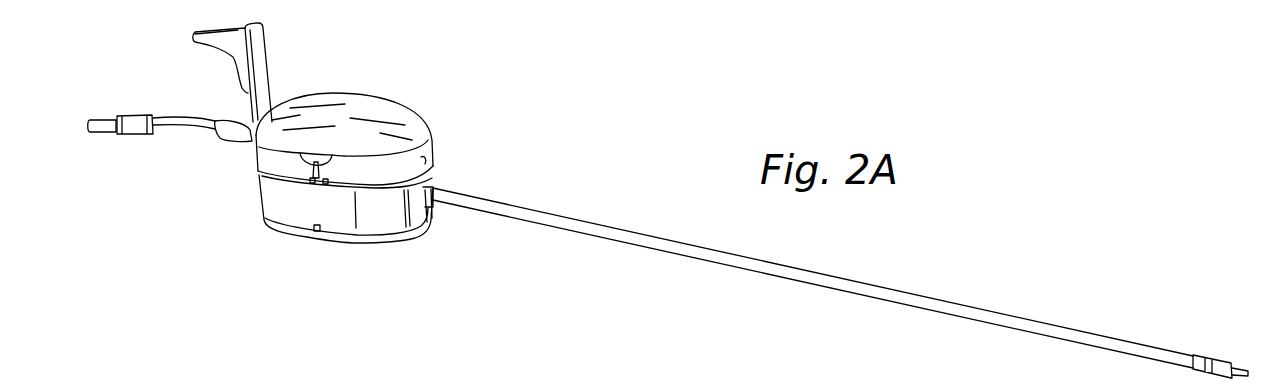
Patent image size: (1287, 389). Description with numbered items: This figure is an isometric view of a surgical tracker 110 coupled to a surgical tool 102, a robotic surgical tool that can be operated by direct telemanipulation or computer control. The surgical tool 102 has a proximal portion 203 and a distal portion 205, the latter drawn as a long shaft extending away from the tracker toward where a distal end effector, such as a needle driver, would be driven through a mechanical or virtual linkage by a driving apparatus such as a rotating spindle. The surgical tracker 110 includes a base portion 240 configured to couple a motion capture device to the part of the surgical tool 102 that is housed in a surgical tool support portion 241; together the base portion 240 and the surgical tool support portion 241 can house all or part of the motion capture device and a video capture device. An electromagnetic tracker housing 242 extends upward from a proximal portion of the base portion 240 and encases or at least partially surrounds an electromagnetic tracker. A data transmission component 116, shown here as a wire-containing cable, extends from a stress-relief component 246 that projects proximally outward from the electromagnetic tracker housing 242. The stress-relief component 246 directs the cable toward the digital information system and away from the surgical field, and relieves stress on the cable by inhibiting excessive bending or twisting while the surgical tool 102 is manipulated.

The surgical tool 102 is at (497, 83).
The surgical tracker 110 is at (230, 173).
The data transmission component 116 is at (133, 118).
The proximal portion 203 is at (383, 123).
The distal portion 205 is at (1208, 338).
The base portion 240 is at (306, 210).
The surgical tool support portion 241 is at (389, 242).
The electromagnetic tracker housing 242 is at (263, 58).
The stress-relief component 246 is at (588, 388).